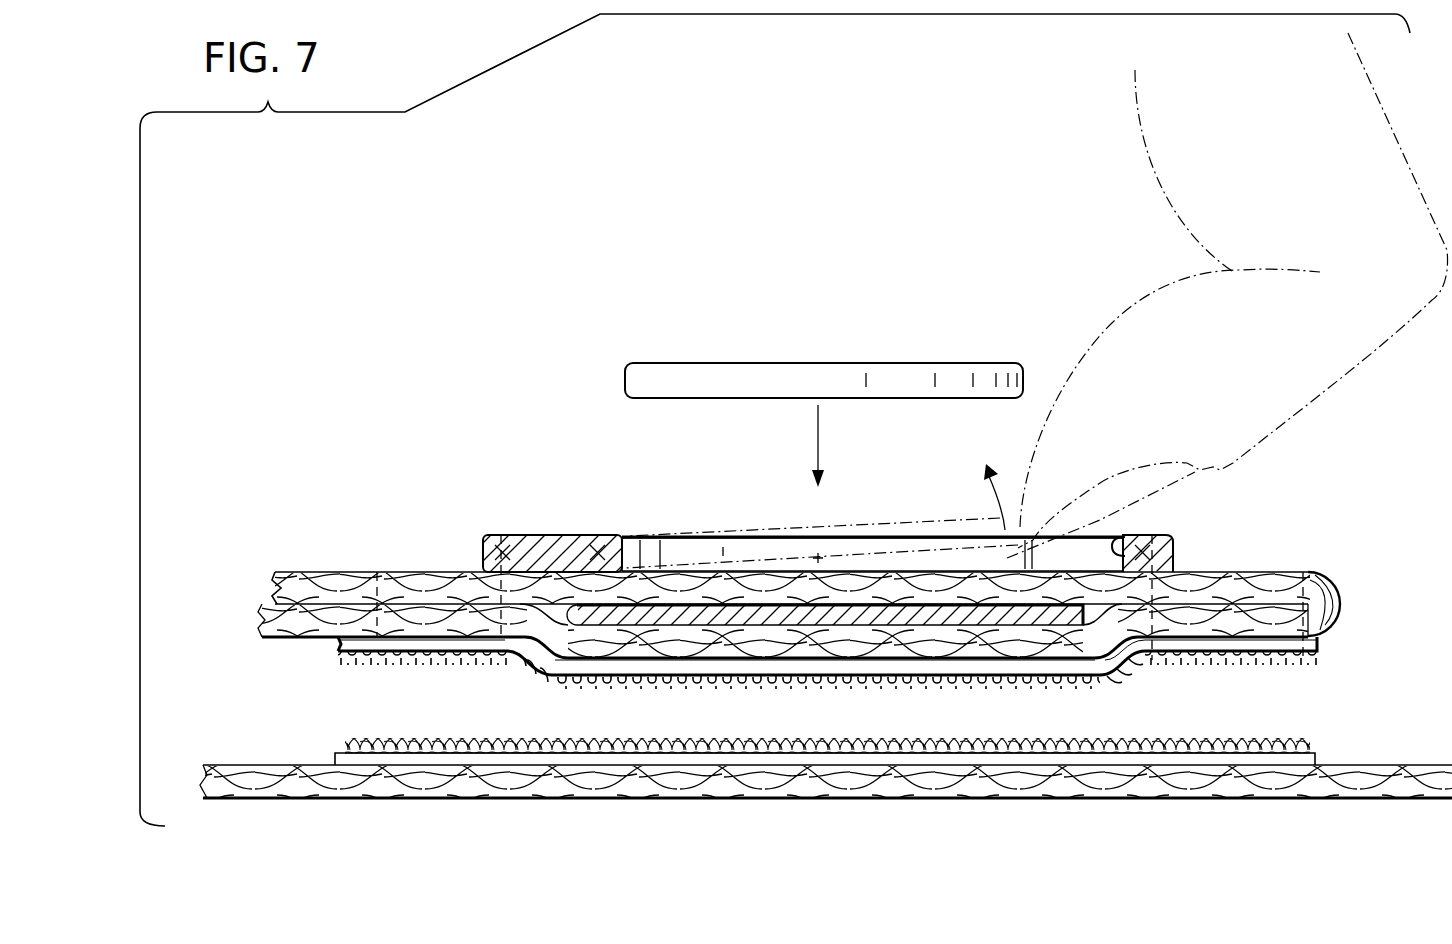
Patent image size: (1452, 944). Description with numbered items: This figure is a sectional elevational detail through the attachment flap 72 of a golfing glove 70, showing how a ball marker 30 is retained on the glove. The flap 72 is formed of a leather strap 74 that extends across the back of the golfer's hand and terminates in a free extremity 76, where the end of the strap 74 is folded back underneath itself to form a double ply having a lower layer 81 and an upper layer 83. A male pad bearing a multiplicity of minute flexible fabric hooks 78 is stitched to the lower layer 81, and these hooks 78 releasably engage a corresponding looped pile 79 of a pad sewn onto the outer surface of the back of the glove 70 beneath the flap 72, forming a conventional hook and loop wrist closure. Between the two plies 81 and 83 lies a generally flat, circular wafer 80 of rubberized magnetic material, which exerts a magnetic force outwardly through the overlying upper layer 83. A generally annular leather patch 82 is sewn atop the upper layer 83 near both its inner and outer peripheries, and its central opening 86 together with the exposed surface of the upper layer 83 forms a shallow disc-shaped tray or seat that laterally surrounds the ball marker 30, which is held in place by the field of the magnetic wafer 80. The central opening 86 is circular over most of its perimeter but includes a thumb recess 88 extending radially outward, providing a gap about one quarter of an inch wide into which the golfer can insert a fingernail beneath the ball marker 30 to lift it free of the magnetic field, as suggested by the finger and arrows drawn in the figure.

The ball marker 30 is at (790, 362).
The golfing glove 70 is at (1372, 755).
The attachment flap 72 is at (1278, 546).
The leather strap 74 is at (406, 582).
The free extremity 76 is at (1340, 596).
The hooks 78 is at (1128, 670).
The looped pile 79 is at (1255, 742).
The magnetic wafer 80 is at (767, 661).
The lower layer 81 is at (300, 625).
The leather patch 82 is at (552, 537).
The upper layer 83 is at (300, 580).
The central opening 86 is at (630, 560).
The thumb recess 88 is at (1120, 532).